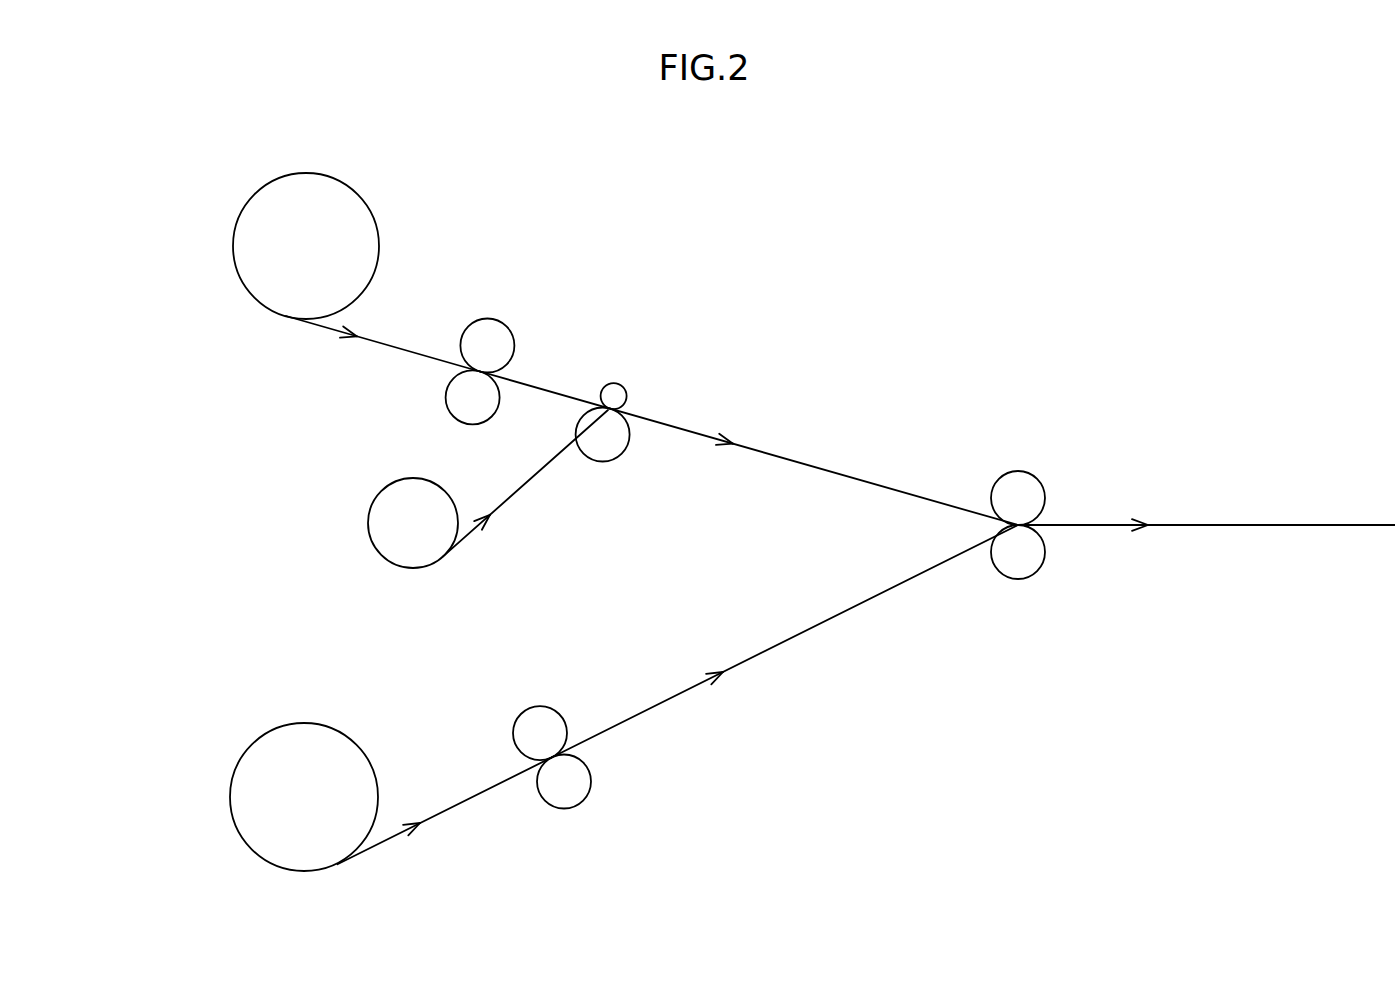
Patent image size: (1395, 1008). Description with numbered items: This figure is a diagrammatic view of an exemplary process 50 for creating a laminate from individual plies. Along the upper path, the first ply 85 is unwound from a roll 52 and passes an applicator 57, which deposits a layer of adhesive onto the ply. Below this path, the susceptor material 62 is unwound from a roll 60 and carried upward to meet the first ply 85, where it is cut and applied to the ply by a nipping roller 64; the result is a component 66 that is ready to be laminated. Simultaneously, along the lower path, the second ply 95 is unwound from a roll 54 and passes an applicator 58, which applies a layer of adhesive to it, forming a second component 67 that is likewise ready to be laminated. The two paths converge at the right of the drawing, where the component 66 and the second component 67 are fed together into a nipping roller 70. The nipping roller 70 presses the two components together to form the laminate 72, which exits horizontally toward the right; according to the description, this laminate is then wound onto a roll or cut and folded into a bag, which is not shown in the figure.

The laminating apparatus 50 is at (778, 495).
The roll 52 is at (294, 207).
The roll 54 is at (268, 783).
The applicator 57 is at (481, 284).
The applicator 58 is at (503, 689).
The roll 60 is at (402, 527).
The susceptor material 62 is at (518, 488).
The nipping roller 64 is at (642, 362).
The component 66 is at (876, 482).
The second component 67 is at (861, 602).
The nipping roller 70 is at (1026, 427).
The laminate 72 is at (1209, 522).
The first ply 85 is at (409, 348).
The second ply 95 is at (448, 803).